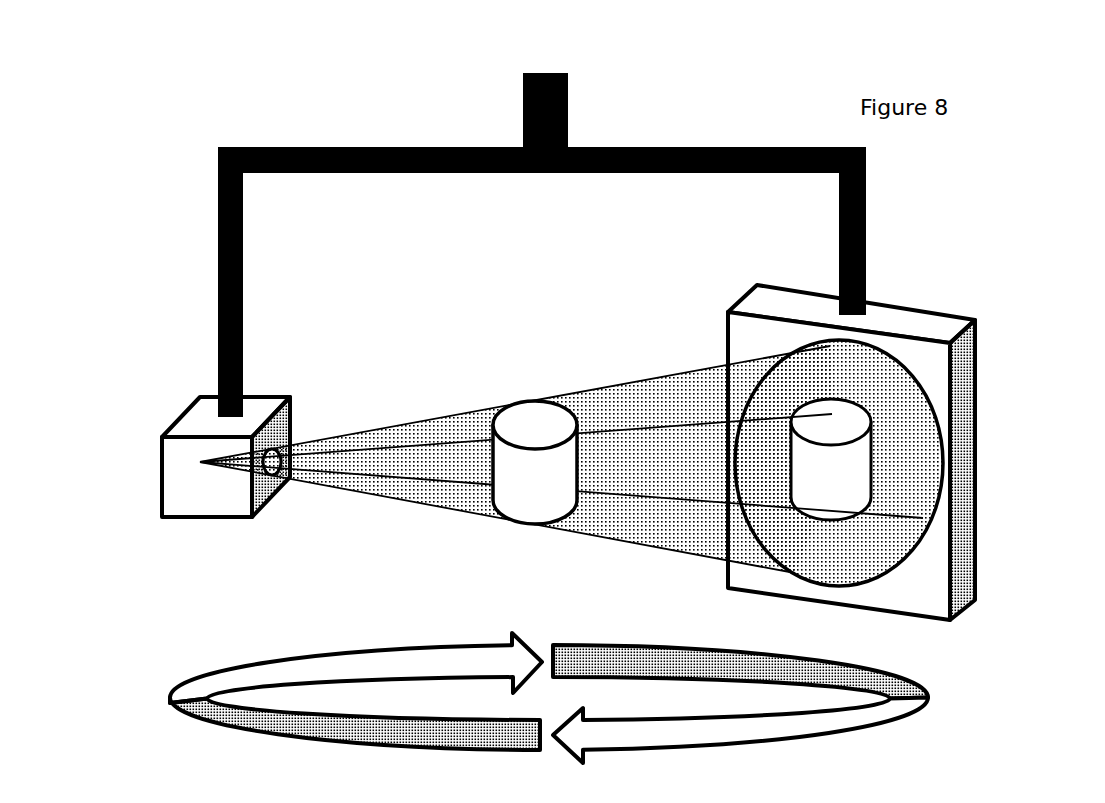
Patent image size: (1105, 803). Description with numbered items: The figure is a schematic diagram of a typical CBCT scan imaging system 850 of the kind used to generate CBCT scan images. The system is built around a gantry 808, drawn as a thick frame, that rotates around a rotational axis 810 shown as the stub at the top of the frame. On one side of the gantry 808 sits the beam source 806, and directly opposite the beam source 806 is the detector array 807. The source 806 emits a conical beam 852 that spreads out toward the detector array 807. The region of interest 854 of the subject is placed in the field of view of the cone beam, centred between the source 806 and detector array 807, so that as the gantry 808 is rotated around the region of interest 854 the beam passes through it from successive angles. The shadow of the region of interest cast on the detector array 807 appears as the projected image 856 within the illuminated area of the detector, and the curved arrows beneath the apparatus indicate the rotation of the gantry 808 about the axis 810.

The CBCT scan imaging system 850 is at (162, 163).
The beam source 806 is at (213, 485).
The detector array 807 is at (903, 350).
The gantry 808 is at (388, 130).
The rotational axis 810 is at (575, 135).
The beam cone 852 is at (390, 408).
The region of interest 854 is at (518, 405).
The projected image of object on screen 856 is at (937, 470).